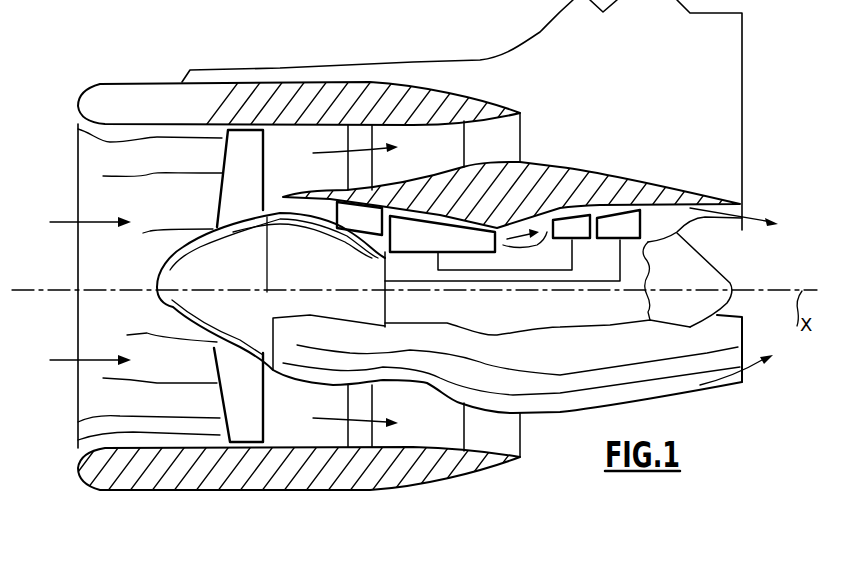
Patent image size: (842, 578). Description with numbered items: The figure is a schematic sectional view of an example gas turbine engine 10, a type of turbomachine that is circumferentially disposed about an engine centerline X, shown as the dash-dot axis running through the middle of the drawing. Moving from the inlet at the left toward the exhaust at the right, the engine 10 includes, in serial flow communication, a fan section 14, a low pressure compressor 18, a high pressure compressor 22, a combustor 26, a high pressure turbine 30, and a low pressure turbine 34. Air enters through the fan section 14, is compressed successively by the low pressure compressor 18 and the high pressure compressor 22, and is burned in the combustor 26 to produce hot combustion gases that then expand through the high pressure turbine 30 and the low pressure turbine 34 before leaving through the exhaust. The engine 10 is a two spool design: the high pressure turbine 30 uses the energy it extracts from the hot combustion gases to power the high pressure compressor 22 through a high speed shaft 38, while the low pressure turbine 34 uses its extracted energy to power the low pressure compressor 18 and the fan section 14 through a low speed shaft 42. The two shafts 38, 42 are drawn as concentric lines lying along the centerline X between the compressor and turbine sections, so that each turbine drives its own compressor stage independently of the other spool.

The gas turbine engine 10 is at (100, 52).
The fan section 14 is at (216, 352).
The low pressure compressor 18 is at (360, 218).
The high pressure compressor 22 is at (437, 237).
The combustor 26 is at (547, 249).
The high pressure turbine 30 is at (583, 240).
The low pressure turbine 34 is at (632, 240).
The high speed shaft 38 is at (497, 271).
The low speed shaft 42 is at (443, 282).